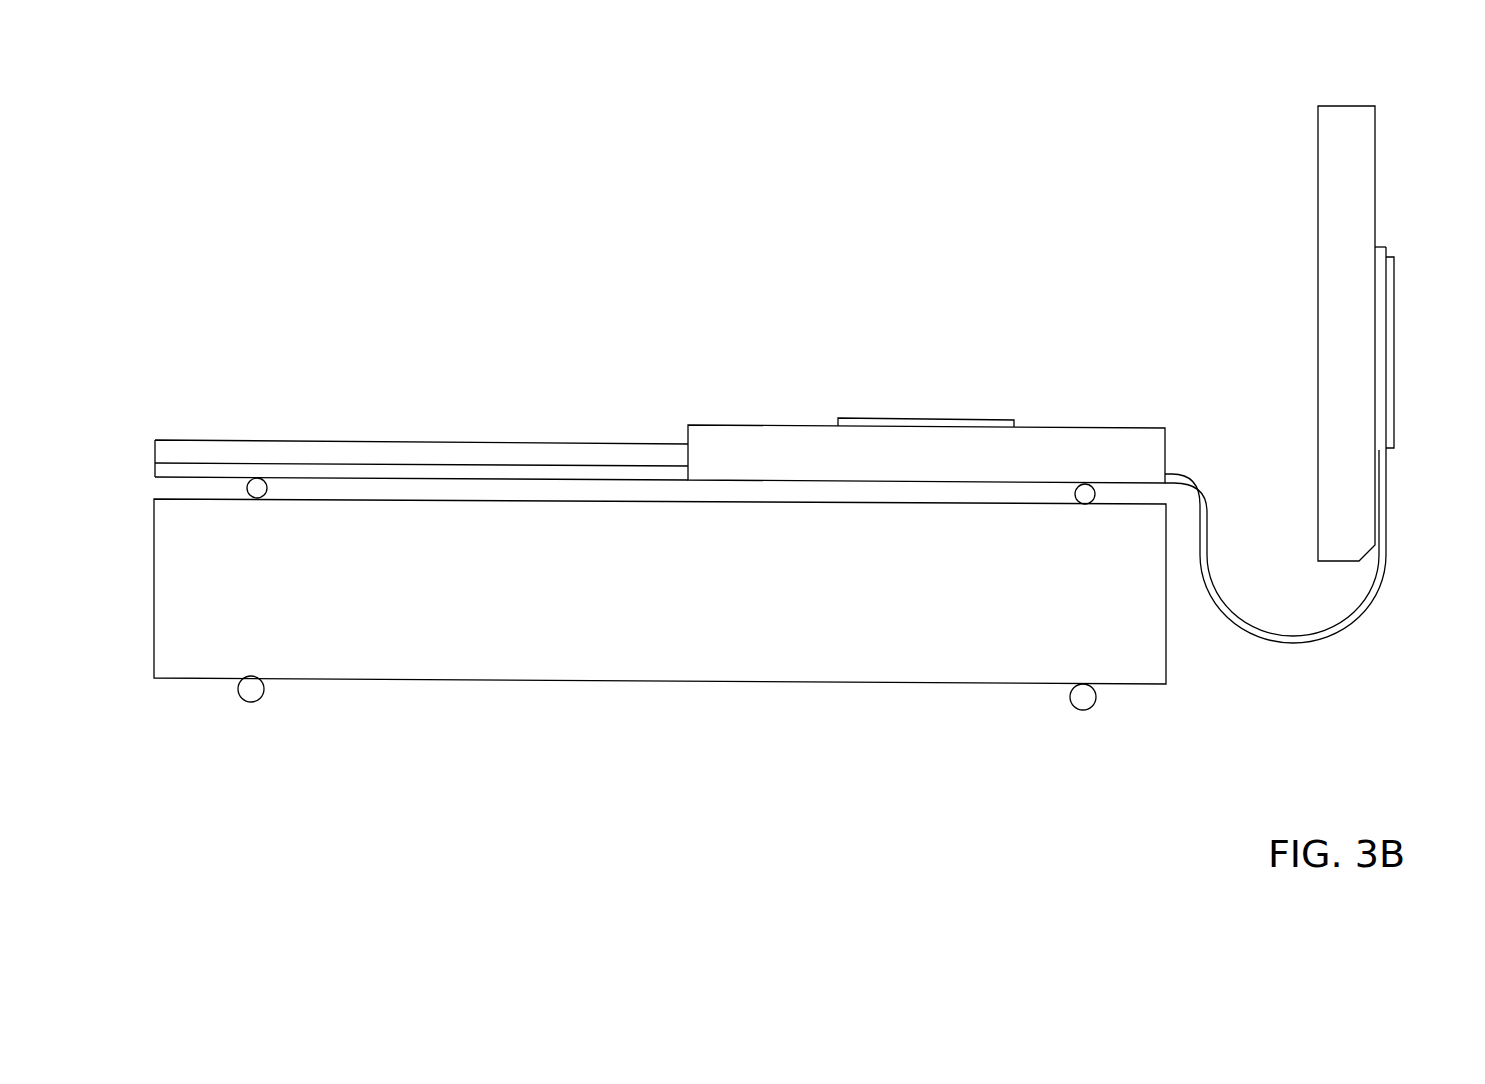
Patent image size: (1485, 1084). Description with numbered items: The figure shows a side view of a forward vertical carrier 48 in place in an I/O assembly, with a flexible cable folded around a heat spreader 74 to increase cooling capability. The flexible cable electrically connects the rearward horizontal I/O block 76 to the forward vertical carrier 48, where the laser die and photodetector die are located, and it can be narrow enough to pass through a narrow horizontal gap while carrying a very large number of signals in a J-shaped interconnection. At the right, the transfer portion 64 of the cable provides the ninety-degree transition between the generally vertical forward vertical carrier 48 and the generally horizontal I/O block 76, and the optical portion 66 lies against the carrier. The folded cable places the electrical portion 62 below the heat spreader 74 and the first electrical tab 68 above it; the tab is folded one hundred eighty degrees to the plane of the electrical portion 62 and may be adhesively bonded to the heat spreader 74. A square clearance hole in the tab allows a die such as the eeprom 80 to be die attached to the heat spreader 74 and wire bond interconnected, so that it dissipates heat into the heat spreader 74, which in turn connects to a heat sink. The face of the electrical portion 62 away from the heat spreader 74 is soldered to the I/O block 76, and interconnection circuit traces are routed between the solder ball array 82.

The forward vertical carrier 48 is at (1285, 129).
The electrical portion 62 is at (485, 473).
The transfer portion 64 is at (1289, 645).
The optical portion 66 is at (1383, 513).
The first electrical tab 68 is at (760, 438).
The heat spreader 74 is at (348, 447).
The rearward horizontal I/O block 76 is at (660, 613).
The eeprom 80 is at (912, 420).
The solder ball array 82 is at (252, 478).